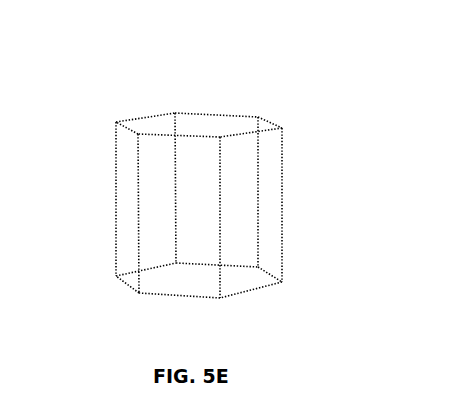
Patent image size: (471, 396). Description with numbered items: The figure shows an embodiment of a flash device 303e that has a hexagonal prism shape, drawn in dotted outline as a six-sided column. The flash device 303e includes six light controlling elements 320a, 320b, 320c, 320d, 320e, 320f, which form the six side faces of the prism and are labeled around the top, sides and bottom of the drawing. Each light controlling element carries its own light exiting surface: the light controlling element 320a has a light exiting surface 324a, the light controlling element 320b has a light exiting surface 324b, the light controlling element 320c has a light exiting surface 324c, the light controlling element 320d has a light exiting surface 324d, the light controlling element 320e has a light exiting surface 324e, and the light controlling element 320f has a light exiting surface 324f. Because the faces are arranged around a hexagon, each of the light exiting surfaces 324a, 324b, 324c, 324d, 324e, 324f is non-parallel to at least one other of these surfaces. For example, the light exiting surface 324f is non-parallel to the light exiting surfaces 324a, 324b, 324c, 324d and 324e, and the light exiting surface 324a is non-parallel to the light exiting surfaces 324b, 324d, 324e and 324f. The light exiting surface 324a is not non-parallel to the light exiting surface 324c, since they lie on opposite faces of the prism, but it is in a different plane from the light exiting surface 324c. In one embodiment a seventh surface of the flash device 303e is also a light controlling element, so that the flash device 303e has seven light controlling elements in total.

The flash device 303e is at (257, 63).
The light controlling element 320a is at (268, 222).
The light controlling element 320b is at (130, 182).
The light controlling element 320c is at (127, 112).
The light controlling element 320d is at (268, 110).
The light controlling element 320e is at (167, 285).
The light controlling element 320f is at (198, 117).
The light exiting surface 324a is at (270, 248).
The light exiting surface 324b is at (123, 218).
The light exiting surface 324c is at (103, 130).
The light exiting surface 324d is at (287, 137).
The light exiting surface 324e is at (195, 283).
The light exiting surface 324f is at (223, 125).